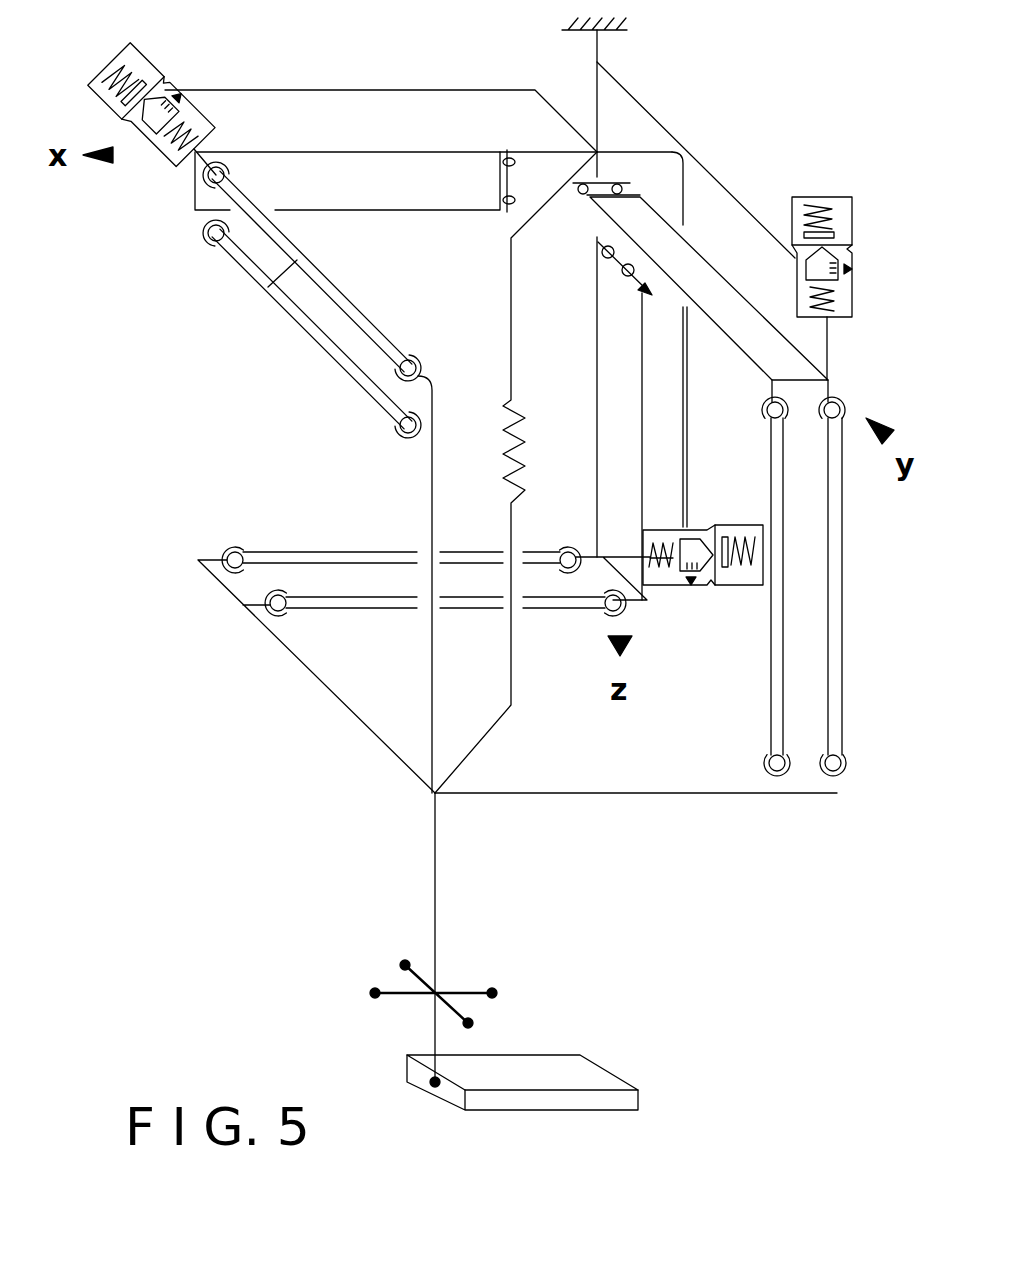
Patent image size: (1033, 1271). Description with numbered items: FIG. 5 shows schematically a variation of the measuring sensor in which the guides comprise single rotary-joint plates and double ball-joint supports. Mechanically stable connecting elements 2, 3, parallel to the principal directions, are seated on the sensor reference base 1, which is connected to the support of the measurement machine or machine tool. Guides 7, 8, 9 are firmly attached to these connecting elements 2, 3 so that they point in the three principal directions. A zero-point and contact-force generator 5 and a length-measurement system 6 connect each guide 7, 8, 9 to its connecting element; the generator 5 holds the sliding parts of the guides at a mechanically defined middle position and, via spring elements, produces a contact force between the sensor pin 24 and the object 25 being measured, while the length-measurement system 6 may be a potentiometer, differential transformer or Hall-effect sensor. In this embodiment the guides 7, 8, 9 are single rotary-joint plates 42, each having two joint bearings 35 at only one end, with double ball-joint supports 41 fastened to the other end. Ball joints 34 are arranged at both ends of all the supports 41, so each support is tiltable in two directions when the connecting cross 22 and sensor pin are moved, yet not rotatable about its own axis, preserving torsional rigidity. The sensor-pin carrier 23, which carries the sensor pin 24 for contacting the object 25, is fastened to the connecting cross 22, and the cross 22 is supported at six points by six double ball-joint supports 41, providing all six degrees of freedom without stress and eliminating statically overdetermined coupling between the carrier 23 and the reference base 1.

The sensor reference base 1 is at (600, 55).
The connecting element 2 is at (545, 150).
The connecting element 3 is at (613, 170).
The zero-point and contact-force generator 5 is at (146, 70).
The length-measurement system 6 is at (197, 146).
The guide 7 is at (340, 146).
The guide 8 is at (662, 206).
The guide 9 is at (645, 296).
The connecting cross 22 is at (400, 795).
The sensor-pin carrier 23 is at (430, 848).
The sensor pin 24 is at (375, 993).
The object to be measured 25 is at (585, 1075).
The ball joint 34 is at (208, 242).
The joint bearing 35 is at (505, 158).
The double ball-joint support 41 is at (286, 300).
The single rotary-joint plate 42 is at (375, 180).